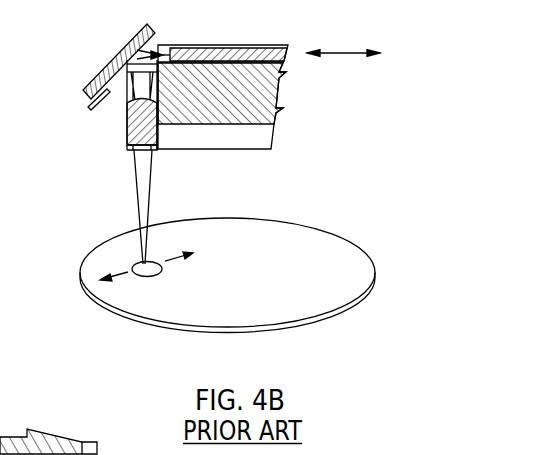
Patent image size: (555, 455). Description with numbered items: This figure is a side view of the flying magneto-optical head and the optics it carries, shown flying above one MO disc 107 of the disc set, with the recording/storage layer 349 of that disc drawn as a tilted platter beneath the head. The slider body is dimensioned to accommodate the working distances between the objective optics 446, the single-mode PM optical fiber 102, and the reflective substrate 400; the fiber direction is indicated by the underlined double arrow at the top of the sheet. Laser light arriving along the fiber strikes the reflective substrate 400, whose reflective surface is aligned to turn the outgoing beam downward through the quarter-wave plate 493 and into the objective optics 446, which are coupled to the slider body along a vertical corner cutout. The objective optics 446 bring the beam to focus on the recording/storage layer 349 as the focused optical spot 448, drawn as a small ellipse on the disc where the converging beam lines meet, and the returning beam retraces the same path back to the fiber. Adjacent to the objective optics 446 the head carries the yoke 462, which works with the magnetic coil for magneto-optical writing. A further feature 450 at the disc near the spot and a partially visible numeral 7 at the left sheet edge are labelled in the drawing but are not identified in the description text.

The reflective substrate 400 is at (102, 68).
The quarter-wave plate 493 is at (128, 43).
The objective optics 446 is at (128, 143).
The yoke 462 is at (128, 148).
The recording/storage layer 349 is at (260, 245).
The disc rim / track 450 is at (125, 276).
The focused optical spot 448 is at (158, 258).
The MO disc 107 is at (82, 255).
The single-mode PM optical fiber 102 is at (360, 35).
The partial numeral 7 is at (4, 243).